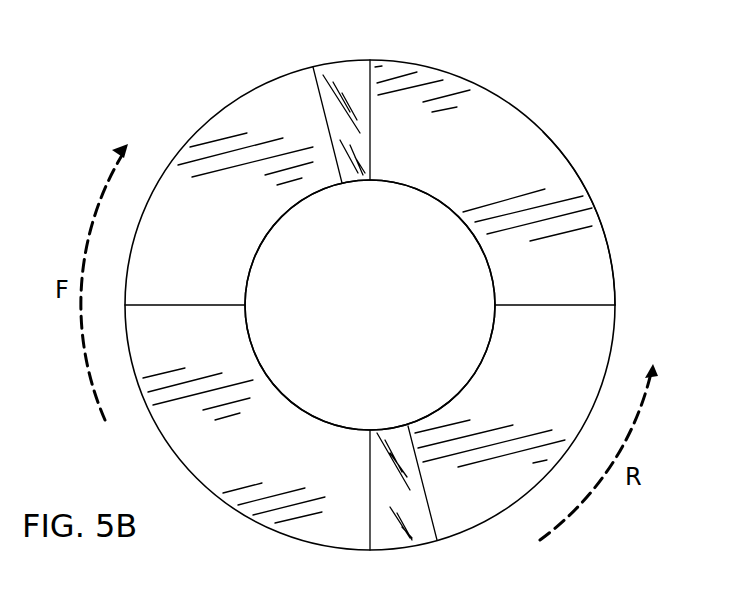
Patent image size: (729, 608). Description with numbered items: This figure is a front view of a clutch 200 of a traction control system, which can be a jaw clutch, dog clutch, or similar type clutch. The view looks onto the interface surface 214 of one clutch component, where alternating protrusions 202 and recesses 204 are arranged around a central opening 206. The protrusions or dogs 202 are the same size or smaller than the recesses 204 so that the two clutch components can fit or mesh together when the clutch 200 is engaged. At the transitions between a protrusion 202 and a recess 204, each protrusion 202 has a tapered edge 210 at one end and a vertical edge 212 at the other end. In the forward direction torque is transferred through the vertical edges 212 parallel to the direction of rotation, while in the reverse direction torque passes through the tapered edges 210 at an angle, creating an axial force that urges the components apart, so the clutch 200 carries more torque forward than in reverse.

The clutch 200 is at (154, 70).
The protrusions 202 is at (502, 153).
The recesses 204 is at (175, 210).
The central opening 206 is at (270, 231).
The tapered edge 210 is at (357, 72).
The vertical edge 212 is at (590, 306).
The interface surface 214 is at (547, 265).